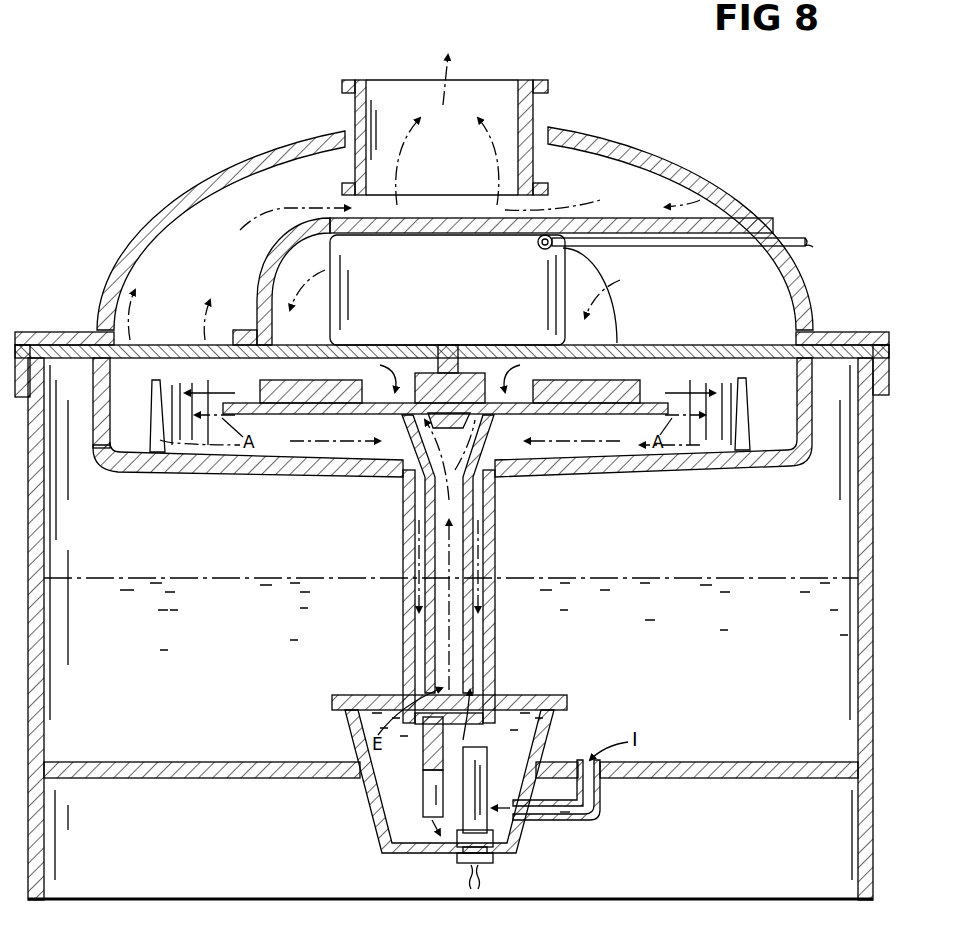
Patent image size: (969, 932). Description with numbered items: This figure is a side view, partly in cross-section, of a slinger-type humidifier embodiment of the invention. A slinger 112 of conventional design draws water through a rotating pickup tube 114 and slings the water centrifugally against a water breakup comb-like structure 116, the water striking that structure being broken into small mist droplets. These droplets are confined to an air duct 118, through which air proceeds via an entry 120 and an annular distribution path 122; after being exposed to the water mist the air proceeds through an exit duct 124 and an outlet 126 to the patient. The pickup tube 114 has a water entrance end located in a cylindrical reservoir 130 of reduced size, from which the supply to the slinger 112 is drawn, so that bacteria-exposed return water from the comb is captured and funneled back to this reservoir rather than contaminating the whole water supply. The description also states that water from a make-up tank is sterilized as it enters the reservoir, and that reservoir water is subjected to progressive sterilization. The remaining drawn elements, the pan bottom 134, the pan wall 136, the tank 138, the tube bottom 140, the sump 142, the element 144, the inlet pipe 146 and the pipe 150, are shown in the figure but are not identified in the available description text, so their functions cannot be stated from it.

The slinger 112 is at (310, 405).
The rotating pickup tube 114 is at (495, 428).
The water breakup comb-like structure 116 is at (152, 414).
The air duct 118 is at (118, 262).
The entry 120 is at (808, 311).
The annular distribution path 122 is at (601, 274).
The exit duct 124 is at (216, 251).
The outlet 126 is at (468, 88).
The cylindrical reservoir 130 is at (404, 632).
The pan bottom 134 is at (208, 472).
The pan wall 136 is at (93, 440).
The reservoir tank 138 is at (169, 692).
The tube bottom cap 140 is at (462, 727).
The sump 142 is at (373, 822).
The heater element 144 is at (477, 800).
The inlet pipe 146 is at (582, 822).
The overflow pipe 150 is at (433, 762).